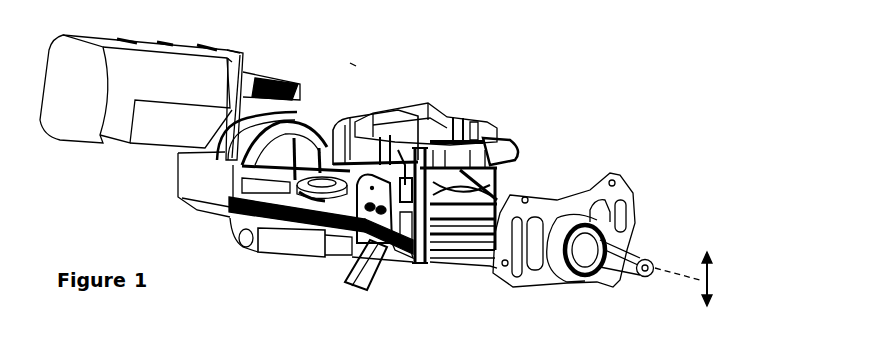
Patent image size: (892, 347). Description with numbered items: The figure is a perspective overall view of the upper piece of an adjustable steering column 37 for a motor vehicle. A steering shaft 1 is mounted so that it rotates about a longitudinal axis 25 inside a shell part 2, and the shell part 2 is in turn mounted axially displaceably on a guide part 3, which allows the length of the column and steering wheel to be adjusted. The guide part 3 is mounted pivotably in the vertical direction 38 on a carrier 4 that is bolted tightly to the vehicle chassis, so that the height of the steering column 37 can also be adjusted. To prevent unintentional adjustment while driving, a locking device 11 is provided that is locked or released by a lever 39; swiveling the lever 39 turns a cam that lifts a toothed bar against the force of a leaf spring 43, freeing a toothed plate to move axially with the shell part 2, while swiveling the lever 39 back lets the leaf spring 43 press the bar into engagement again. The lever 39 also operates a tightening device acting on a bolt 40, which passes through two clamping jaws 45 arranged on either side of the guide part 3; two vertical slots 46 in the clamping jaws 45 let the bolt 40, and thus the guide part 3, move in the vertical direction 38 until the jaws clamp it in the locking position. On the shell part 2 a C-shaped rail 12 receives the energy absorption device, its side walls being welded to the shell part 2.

The steering shaft 1 is at (650, 262).
The shell part 2 is at (495, 203).
The guide part 3 is at (267, 193).
The carrier 4 is at (355, 128).
The locking device 11 is at (428, 267).
The C-shaped rail 12 is at (482, 262).
The longitudinal axis 25 is at (685, 275).
The adjustable steering column 37 is at (352, 58).
The vertical direction 38 is at (713, 280).
The lever 39 is at (360, 283).
The bolt 40 is at (453, 150).
The leaf spring 43 is at (270, 260).
The clamping jaws 45 is at (385, 125).
The vertical slots 46 is at (401, 155).